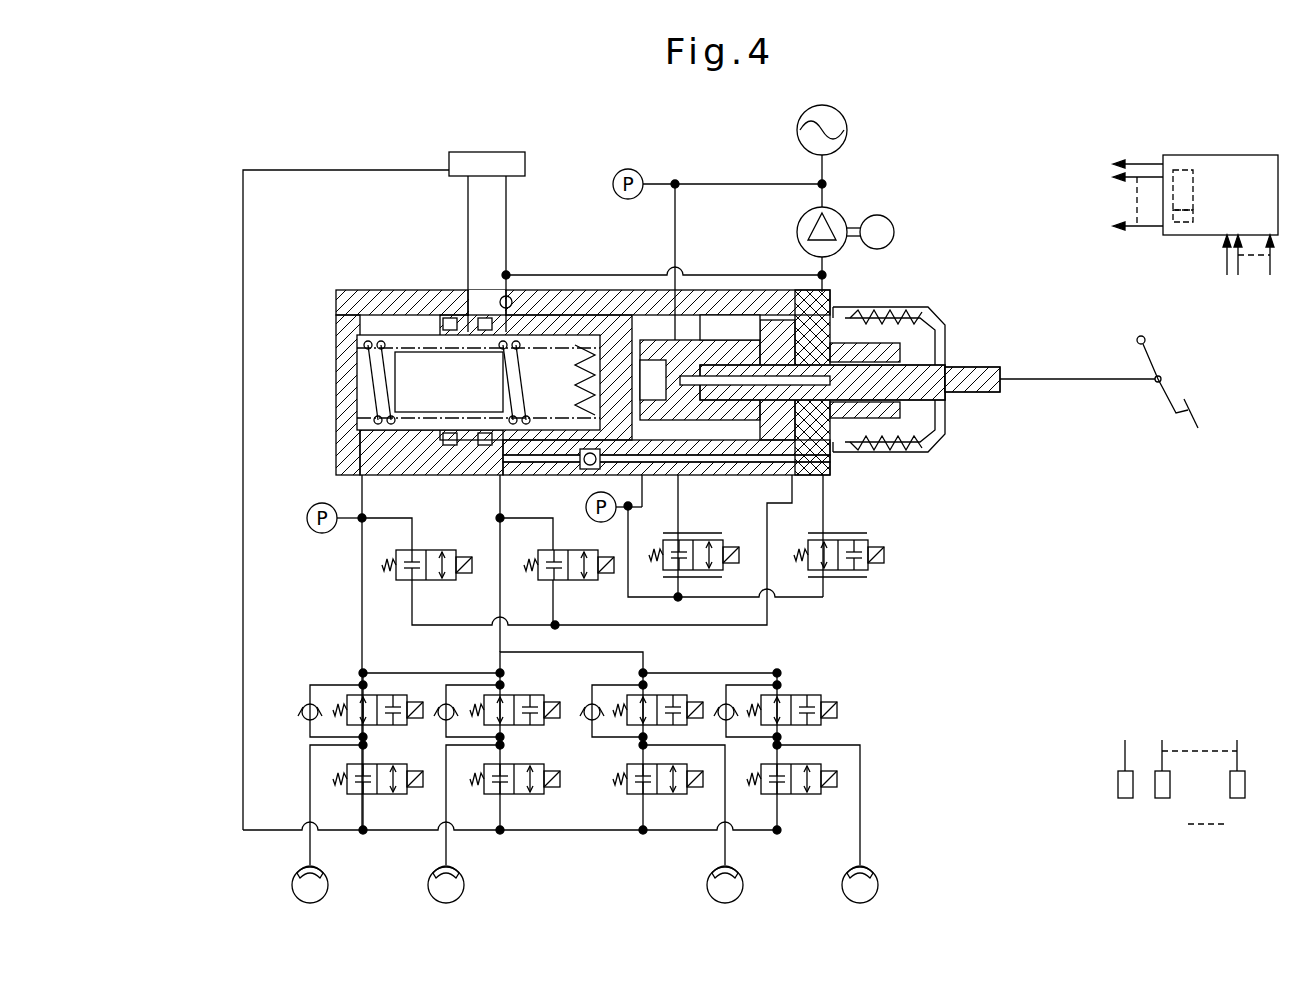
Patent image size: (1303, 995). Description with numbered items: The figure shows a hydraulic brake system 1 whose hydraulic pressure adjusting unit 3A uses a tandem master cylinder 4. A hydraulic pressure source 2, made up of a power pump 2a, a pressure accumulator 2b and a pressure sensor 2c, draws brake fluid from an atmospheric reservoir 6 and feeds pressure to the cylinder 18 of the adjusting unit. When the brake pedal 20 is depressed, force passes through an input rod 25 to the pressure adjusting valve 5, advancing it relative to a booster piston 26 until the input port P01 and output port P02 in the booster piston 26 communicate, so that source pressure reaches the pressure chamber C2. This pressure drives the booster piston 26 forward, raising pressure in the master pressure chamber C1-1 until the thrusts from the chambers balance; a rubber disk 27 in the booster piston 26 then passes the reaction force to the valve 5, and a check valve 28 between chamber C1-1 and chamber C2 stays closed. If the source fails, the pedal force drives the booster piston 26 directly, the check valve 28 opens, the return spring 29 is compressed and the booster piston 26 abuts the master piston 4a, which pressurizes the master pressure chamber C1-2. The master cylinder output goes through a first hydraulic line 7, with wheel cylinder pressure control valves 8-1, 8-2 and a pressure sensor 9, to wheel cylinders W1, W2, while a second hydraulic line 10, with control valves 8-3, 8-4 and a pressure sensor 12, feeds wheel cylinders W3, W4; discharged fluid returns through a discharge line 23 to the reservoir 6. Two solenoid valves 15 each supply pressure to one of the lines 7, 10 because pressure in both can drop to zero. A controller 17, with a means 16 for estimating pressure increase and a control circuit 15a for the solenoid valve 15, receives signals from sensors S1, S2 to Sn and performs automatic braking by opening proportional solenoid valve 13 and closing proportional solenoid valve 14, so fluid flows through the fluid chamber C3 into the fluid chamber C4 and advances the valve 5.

The hydraulic brake system 1 is at (586, 224).
The hydraulic pressure source 2 is at (758, 194).
The power pump 2a is at (840, 216).
The pressure accumulator 2b is at (840, 126).
The pressure sensor 2c is at (620, 172).
The hydraulic pressure adjusting unit 3A is at (929, 294).
The master cylinder 4 is at (436, 291).
The master piston 4a is at (486, 450).
The pressure adjusting valve 5 is at (736, 402).
The atmospheric reservoir 6 is at (455, 170).
The first hydraulic line 7 is at (362, 602).
The wheel cylinder pressure control valve 8-1 is at (312, 768).
The wheel cylinder pressure control valve 8-2 is at (574, 798).
The wheel cylinder pressure control valve 8-3 is at (626, 798).
The wheel cylinder pressure control valve 8-4 is at (864, 726).
The pressure sensor 9 is at (310, 530).
The second hydraulic line 10 is at (572, 654).
The pressure sensor 12 is at (562, 552).
The proportional solenoid valve 13 is at (716, 546).
The proportional solenoid valve 14 is at (870, 548).
The solenoid valve 15 is at (446, 552).
The control circuit 15a is at (1178, 236).
The means for estimating the amount of pressure increase 16 is at (1178, 170).
The controller 17 is at (1230, 156).
The cylinder 18 is at (860, 296).
The brake pedal 20 is at (1190, 398).
The discharge line 23 is at (243, 500).
The input rod 25 is at (968, 392).
The booster piston 26 is at (812, 442).
The rubber disk 27 is at (620, 322).
The check valve 28 is at (582, 468).
The return spring 29 is at (570, 320).
The master pressure chamber C1-1 is at (523, 290).
The master pressure chamber C1-2 is at (356, 344).
The pressure chamber C2 is at (745, 336).
The fluid chamber C3 is at (668, 430).
The fluid chamber C4 is at (699, 425).
The input port P01 is at (735, 338).
The output port P02 is at (792, 320).
The wheel cylinder W1 is at (324, 874).
The wheel cylinder W2 is at (460, 874).
The wheel cylinder W3 is at (739, 874).
The wheel cylinder W4 is at (874, 874).
The sensor S1 is at (1129, 789).
The sensor S2 is at (1195, 789).
The sensor Sn is at (1220, 789).